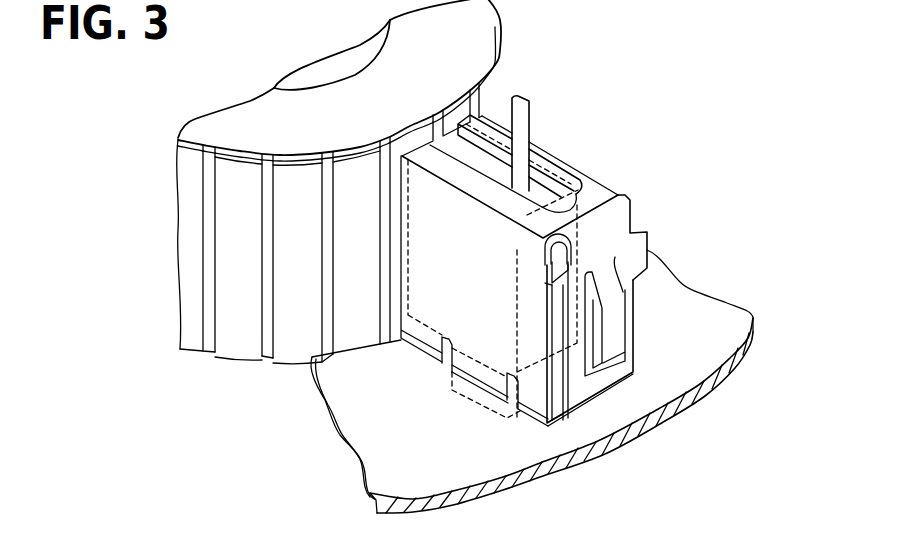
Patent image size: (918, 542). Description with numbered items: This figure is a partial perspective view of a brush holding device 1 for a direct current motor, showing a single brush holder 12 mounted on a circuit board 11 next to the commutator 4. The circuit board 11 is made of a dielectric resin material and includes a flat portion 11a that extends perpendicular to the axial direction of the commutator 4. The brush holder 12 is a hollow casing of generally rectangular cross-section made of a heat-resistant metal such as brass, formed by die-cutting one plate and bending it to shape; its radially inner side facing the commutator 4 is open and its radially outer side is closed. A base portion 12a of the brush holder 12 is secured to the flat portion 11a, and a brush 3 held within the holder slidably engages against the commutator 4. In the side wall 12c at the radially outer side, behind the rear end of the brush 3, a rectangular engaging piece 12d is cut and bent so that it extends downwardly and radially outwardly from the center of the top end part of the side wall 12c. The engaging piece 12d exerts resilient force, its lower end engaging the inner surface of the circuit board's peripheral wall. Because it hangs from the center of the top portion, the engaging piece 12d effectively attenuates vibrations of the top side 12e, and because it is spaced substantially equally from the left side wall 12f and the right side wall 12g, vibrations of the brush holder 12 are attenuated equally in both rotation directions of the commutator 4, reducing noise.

The brush holding device 1 is at (768, 157).
The brush 3 is at (543, 163).
The commutator 4 is at (187, 209).
The circuit board 11 is at (560, 362).
The flat portion 11a is at (732, 297).
The brush holder 12 is at (577, 294).
The base portion 12a is at (413, 353).
The side wall 12c is at (583, 392).
The engaging piece 12d is at (613, 323).
The top side 12e is at (512, 207).
The left side wall 12f is at (488, 337).
The right side wall 12g is at (630, 212).